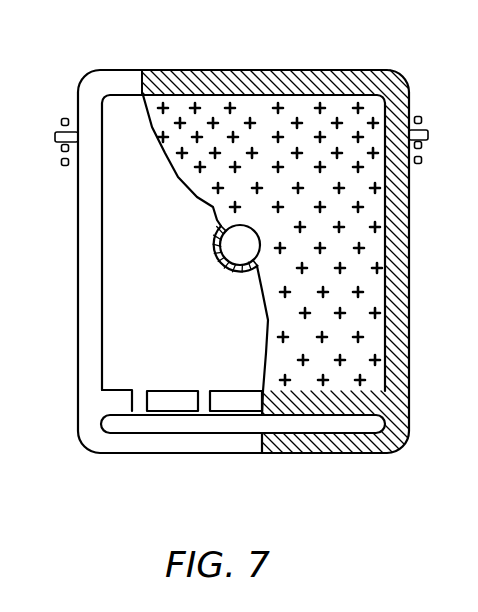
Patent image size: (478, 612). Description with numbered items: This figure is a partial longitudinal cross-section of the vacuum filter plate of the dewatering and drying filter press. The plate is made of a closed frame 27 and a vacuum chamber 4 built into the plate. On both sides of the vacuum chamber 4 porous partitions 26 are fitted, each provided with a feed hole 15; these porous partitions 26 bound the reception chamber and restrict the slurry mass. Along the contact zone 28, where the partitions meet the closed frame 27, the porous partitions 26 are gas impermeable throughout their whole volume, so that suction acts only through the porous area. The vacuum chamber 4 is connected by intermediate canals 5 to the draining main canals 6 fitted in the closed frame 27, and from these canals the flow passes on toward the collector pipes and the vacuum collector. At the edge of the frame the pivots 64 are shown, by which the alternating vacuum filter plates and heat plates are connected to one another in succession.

The vacuum chamber 4 is at (125, 138).
The closed frame 27 is at (130, 88).
The contact zone 28 is at (200, 70).
The porous partition 26 is at (283, 117).
The feed hole 15 is at (230, 255).
The intermediate canal 5 is at (140, 410).
The draining main canal 6 is at (215, 423).
The pivot 64 is at (425, 145).